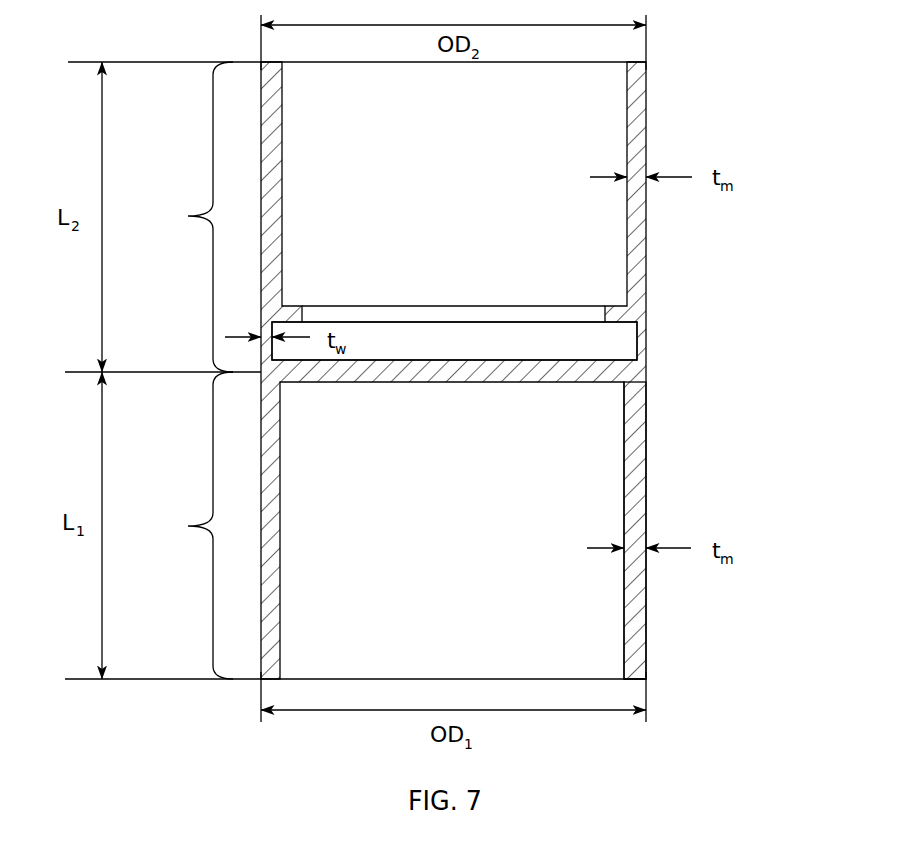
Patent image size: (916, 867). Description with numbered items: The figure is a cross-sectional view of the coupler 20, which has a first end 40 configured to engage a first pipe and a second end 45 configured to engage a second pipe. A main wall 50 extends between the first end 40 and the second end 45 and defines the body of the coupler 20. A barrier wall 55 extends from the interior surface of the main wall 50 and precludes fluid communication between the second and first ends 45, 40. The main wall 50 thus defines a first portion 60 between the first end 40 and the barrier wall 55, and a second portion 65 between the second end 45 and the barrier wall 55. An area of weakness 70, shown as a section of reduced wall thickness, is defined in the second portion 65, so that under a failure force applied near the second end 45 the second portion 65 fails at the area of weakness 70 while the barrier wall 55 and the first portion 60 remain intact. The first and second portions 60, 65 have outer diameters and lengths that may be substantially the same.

The coupler 20 is at (790, 155).
The first end 40 is at (608, 679).
The second end 45 is at (600, 62).
The main wall 50 is at (633, 465).
The barrier wall 55 is at (567, 361).
The first portion 60 is at (402, 525).
The second portion 65 is at (402, 217).
The area of weakness 70 is at (657, 340).